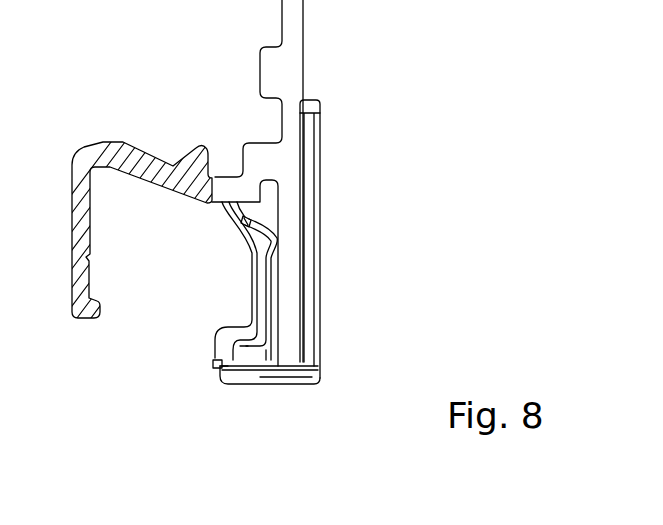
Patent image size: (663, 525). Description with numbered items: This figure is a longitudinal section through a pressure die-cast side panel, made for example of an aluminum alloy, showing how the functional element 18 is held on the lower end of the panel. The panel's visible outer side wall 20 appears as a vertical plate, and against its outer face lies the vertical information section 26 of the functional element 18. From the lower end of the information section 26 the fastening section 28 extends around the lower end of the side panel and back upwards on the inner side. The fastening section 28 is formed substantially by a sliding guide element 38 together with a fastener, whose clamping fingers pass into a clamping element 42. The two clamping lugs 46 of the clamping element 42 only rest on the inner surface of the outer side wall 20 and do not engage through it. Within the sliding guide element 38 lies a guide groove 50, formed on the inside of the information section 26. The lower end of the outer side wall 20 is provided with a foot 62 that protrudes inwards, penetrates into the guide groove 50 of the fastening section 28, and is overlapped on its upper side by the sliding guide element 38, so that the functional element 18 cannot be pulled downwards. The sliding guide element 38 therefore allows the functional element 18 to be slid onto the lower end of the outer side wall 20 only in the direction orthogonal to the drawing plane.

The outer side wall 20 is at (268, 158).
The information section 26 is at (316, 303).
The clamping lugs 46 is at (283, 237).
The clamping element 42 is at (215, 290).
The sliding guide element 38 is at (193, 378).
The functional element 18 is at (330, 370).
The fastening section 28 is at (290, 388).
The foot 62 is at (267, 355).
The guide groove 50 is at (243, 353).